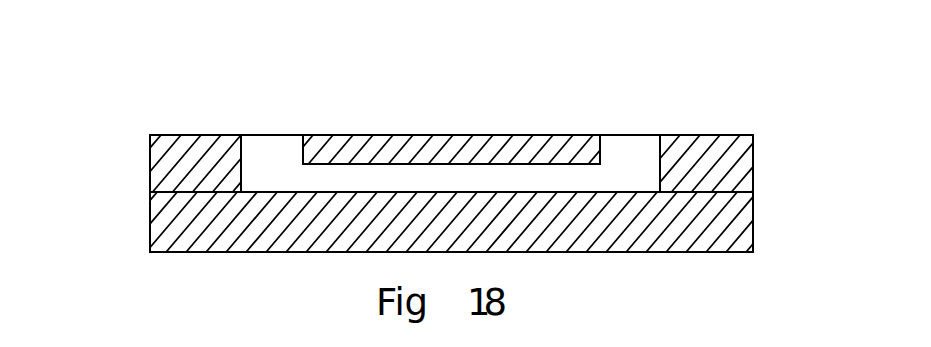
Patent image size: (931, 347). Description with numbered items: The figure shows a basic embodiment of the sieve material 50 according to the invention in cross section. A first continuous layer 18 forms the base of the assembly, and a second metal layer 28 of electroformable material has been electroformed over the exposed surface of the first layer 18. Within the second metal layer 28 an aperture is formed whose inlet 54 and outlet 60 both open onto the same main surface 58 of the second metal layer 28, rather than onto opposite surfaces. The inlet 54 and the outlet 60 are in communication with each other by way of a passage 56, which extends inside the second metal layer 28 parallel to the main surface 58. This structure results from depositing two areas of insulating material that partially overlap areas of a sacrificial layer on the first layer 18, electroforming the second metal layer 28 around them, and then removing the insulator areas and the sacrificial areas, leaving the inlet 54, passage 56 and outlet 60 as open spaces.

The sieve material 50 is at (118, 132).
The first continuous layer 18 is at (755, 217).
The second metal layer 28 is at (755, 155).
The main surface 58 is at (166, 135).
The inlet 54 is at (282, 153).
The passage 56 is at (490, 182).
The outlet 60 is at (632, 150).